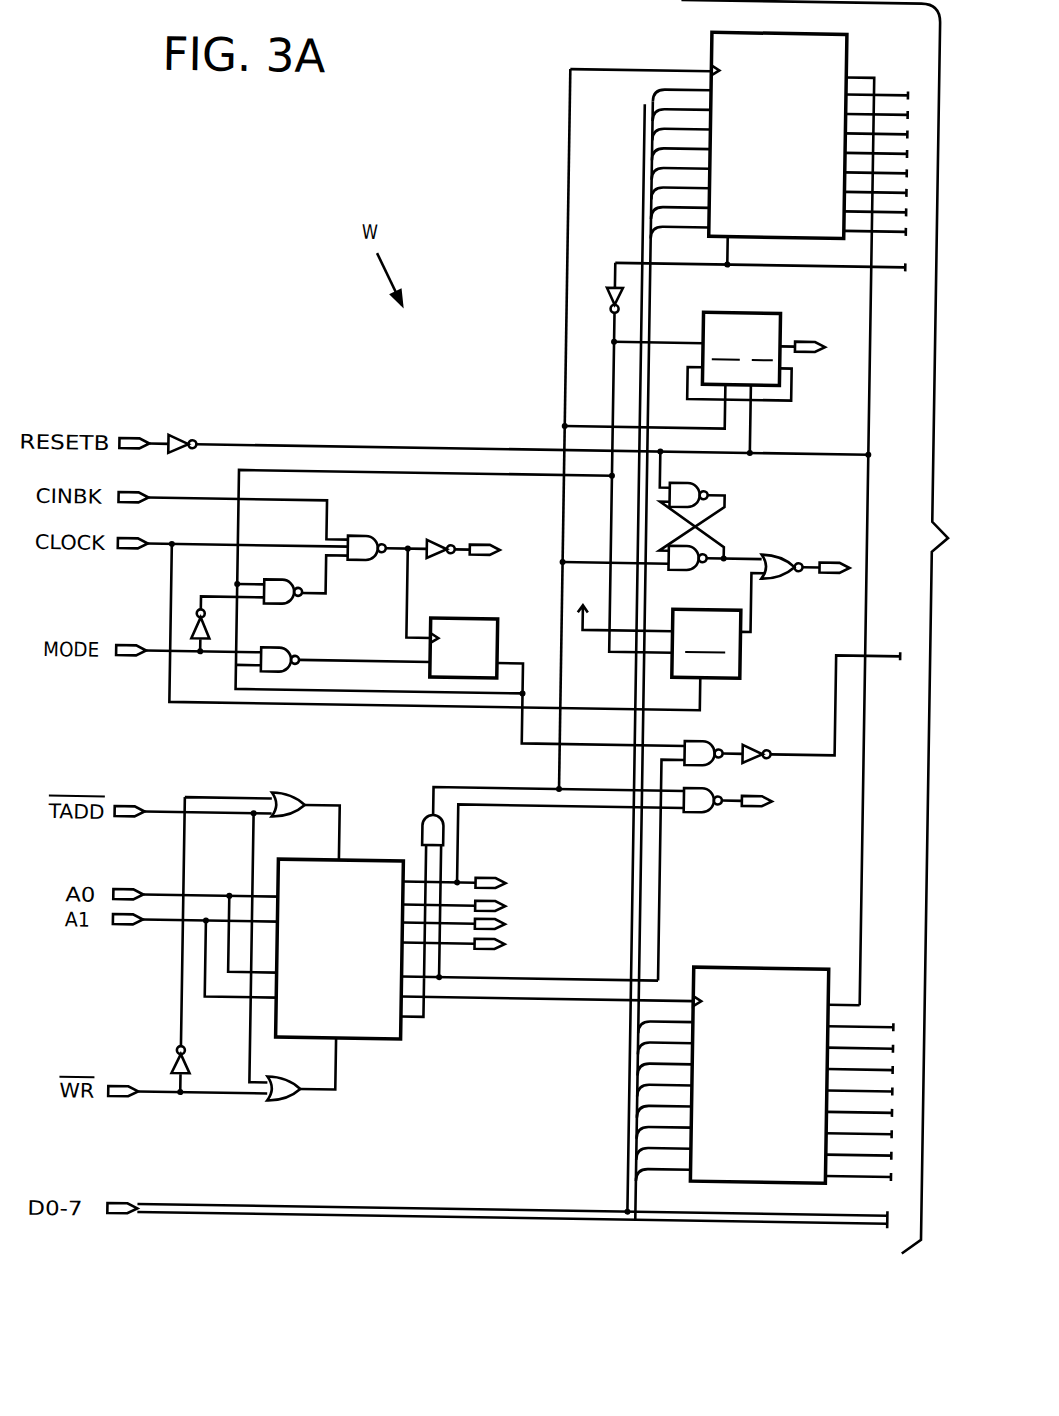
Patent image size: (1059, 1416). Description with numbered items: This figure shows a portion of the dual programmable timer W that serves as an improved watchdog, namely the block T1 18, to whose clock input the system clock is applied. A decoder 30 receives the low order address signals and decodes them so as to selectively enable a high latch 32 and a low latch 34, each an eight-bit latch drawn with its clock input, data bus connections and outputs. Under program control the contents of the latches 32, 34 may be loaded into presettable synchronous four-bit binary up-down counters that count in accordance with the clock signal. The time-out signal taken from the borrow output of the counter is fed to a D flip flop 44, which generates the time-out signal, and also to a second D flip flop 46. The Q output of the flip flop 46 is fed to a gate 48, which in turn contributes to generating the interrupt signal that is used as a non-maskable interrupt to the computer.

The block T1 18 is at (326, 377).
The decoder 30 is at (385, 1046).
The latch 32 is at (784, 182).
The latch 34 is at (773, 1132).
The D flip flop 44 is at (778, 357).
The D flip flop 46 is at (743, 630).
The gate 48 is at (790, 578).